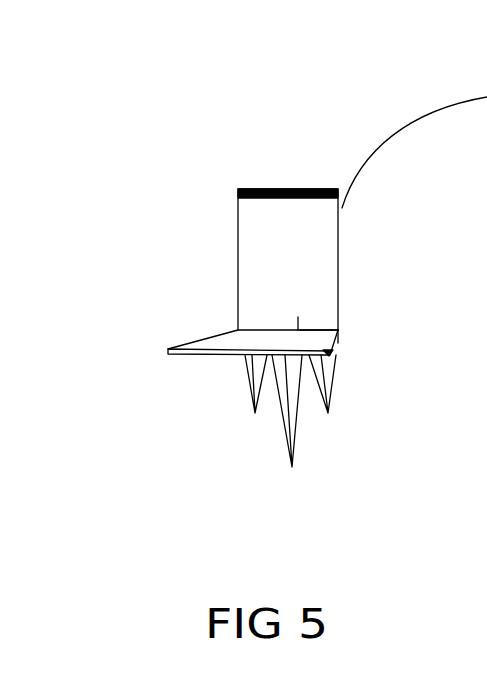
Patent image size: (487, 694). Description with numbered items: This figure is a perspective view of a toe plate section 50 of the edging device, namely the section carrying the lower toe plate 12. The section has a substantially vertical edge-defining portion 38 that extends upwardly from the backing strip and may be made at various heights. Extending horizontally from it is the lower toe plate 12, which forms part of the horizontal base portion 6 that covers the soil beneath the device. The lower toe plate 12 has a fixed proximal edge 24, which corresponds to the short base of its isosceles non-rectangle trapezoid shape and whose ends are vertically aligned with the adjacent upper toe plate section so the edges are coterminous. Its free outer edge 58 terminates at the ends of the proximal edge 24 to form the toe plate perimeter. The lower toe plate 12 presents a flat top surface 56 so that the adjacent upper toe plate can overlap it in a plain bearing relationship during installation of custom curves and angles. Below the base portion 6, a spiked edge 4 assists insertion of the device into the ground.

The toe plate section 50 is at (327, 105).
The edge-defining portion 38 is at (340, 269).
The proximal edge 24 is at (298, 317).
The lower toe plate 12 is at (238, 332).
The free outer edge 58 is at (168, 350).
The flat top surface 56 is at (310, 337).
The horizontal base portion 6 is at (345, 352).
The spiked edge 4 is at (353, 393).